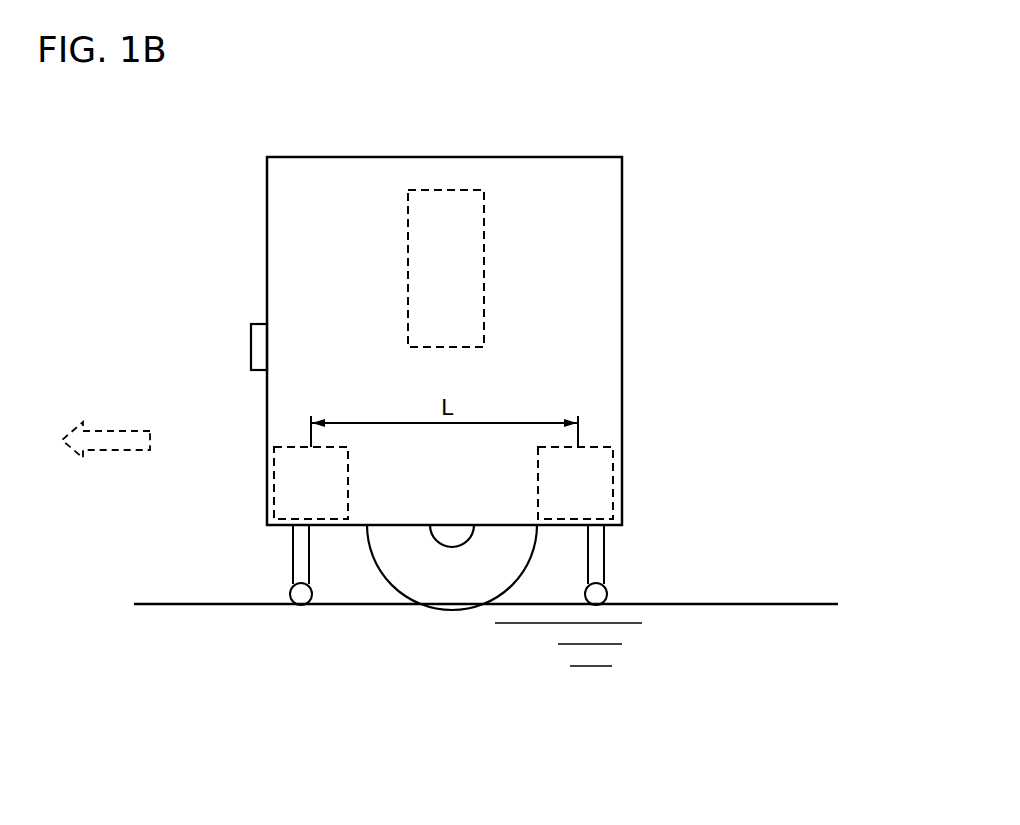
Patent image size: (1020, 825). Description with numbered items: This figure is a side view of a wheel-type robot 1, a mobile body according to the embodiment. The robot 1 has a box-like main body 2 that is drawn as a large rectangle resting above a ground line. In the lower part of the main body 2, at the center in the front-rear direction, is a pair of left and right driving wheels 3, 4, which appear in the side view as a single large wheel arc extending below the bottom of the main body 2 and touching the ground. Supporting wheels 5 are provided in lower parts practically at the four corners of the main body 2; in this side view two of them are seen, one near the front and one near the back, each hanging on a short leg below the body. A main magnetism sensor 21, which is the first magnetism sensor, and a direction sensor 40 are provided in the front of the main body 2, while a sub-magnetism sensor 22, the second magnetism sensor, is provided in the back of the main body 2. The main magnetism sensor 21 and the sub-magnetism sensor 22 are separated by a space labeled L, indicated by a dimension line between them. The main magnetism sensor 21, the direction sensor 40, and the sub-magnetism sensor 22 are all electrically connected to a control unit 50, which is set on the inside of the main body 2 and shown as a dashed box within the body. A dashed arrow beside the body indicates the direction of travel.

The robot 1 is at (200, 164).
The main body 2 is at (267, 273).
The driving wheel 3 is at (442, 568).
The driving wheel 4 is at (452, 536).
The supporting wheel 5 is at (290, 593).
The main magnetism sensor 21 is at (275, 483).
The sub-magnetism sensor 22 is at (613, 487).
The direction sensor 40 is at (251, 347).
The control unit 50 is at (484, 248).